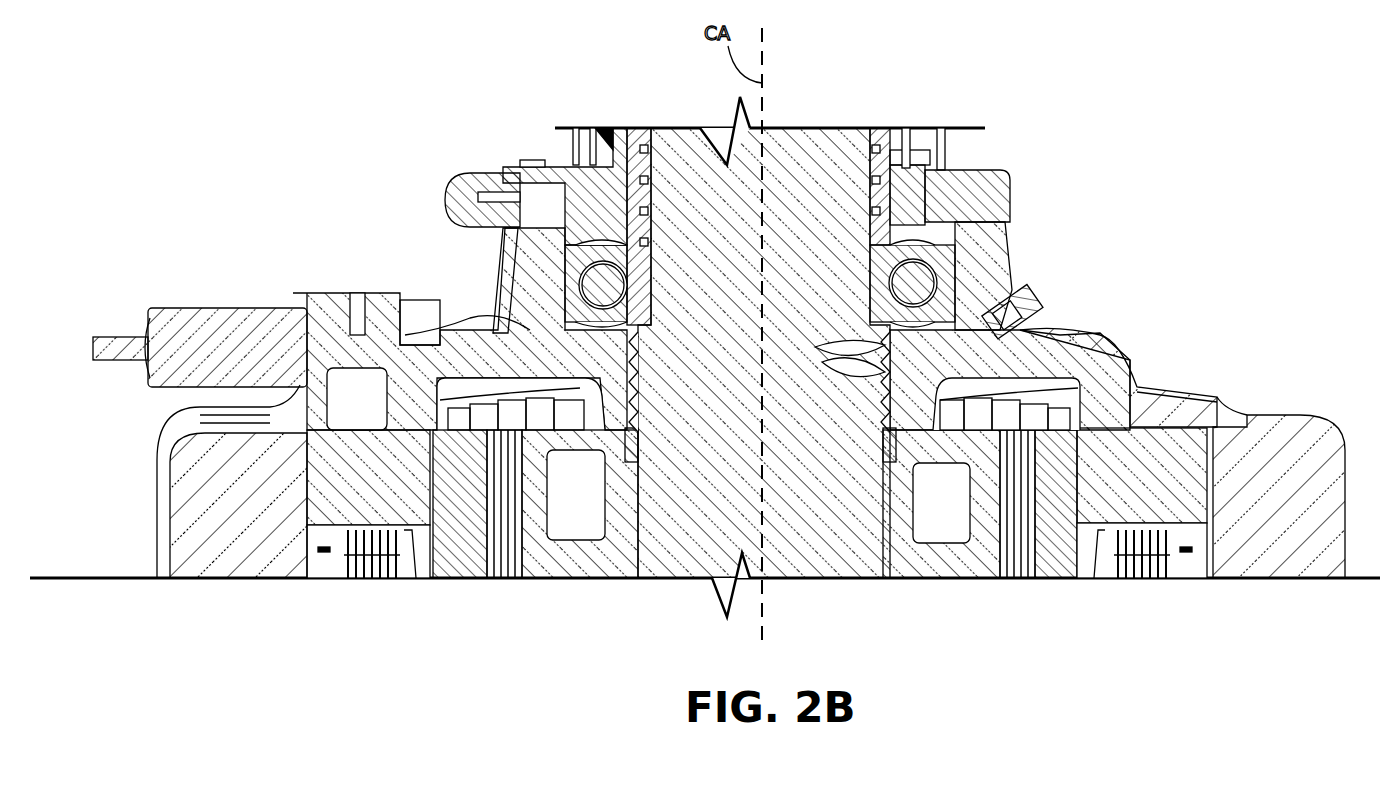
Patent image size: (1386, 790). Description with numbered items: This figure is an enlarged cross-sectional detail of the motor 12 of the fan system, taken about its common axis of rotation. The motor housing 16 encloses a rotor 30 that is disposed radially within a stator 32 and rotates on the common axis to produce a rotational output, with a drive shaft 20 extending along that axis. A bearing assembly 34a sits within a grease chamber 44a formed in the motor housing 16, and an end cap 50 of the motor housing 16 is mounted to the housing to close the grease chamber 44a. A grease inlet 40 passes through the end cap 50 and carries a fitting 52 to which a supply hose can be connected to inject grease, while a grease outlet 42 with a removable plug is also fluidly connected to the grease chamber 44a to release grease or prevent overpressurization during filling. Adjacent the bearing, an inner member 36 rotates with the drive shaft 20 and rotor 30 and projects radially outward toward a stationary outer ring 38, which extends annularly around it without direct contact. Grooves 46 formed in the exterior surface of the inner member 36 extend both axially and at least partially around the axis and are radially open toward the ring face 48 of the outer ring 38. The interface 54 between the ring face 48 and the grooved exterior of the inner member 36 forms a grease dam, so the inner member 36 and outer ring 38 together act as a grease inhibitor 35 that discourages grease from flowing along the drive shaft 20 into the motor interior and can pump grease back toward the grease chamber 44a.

The motor 12 is at (355, 238).
The motor housing 16 is at (1292, 398).
The drive shaft 20 is at (793, 160).
The rotor 30 is at (445, 328).
The stator 32 is at (352, 415).
The bearing assembly 34a is at (962, 270).
The grease inhibitor 35 is at (900, 438).
The inner member 36 is at (640, 318).
The outer ring 38 is at (607, 430).
The grease inlet 40 is at (556, 176).
The grease outlet 42 is at (978, 310).
The grease chamber 44a is at (900, 218).
The grooves 46 is at (828, 346).
The ring face 48 is at (470, 404).
The end cap 50 is at (990, 190).
The fitting 52 is at (488, 183).
The interface 54 is at (618, 366).